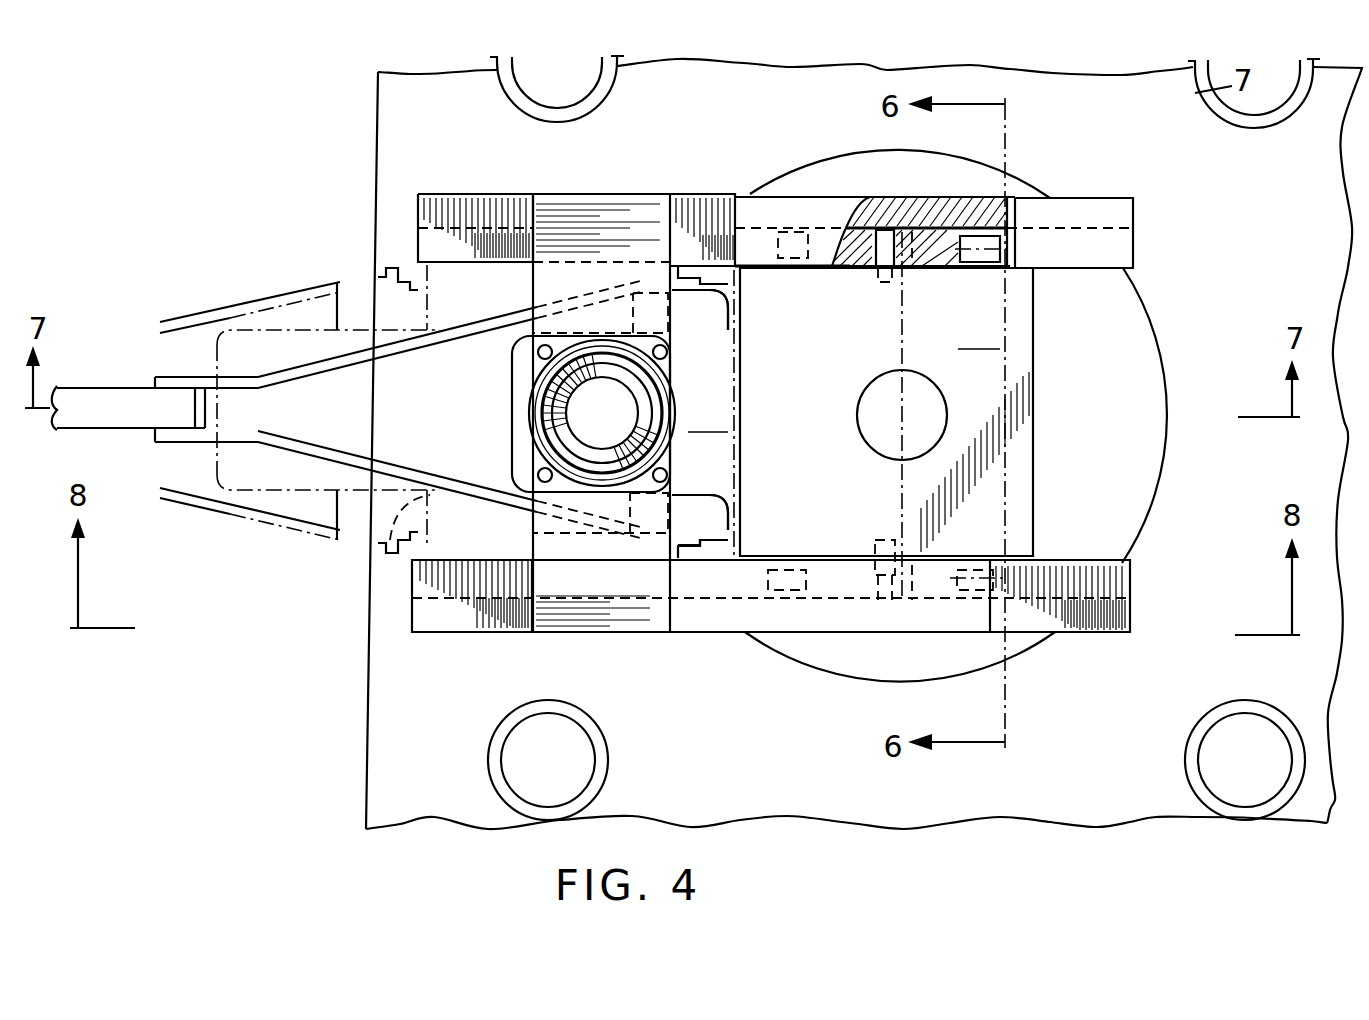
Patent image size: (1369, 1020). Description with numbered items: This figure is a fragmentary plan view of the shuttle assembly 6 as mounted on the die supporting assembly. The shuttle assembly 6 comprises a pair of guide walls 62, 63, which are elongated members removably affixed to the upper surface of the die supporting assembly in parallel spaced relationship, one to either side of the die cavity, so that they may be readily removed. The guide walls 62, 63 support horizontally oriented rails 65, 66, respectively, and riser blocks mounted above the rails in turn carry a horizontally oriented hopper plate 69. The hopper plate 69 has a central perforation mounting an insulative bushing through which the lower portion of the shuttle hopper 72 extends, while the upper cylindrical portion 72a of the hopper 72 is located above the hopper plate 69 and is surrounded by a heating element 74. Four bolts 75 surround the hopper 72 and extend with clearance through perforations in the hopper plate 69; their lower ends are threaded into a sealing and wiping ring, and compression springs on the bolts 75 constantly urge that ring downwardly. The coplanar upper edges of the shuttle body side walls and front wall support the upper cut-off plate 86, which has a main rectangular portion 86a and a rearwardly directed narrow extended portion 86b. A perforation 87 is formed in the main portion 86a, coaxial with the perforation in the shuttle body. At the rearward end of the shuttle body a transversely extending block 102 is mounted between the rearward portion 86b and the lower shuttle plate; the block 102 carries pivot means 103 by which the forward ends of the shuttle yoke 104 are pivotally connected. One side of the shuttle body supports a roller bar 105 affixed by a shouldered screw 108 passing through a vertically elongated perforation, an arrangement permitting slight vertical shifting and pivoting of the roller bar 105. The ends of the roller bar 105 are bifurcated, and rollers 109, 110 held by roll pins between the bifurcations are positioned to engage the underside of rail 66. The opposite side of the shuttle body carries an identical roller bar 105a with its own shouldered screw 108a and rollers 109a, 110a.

The shuttle assembly 6 is at (732, 186).
The guide wall 62 is at (975, 197).
The guide wall 63 is at (1130, 583).
The rail 65 is at (1133, 255).
The rail 66 is at (1100, 565).
The hopper plate 69 is at (633, 192).
The hopper 72 is at (580, 370).
The upper cylindrical portion 72a is at (545, 404).
The heating element 74 is at (675, 392).
The bolts 75 is at (538, 350).
The upper cut-off plate 86 is at (1033, 388).
The main rectangular portion 86a is at (977, 335).
The rearwardly directed narrow extended portion 86b is at (707, 418).
The perforation 87 is at (930, 378).
The transversely extending block 102 is at (713, 515).
The pivot means 103 is at (680, 552).
The shuttle yoke 104 is at (422, 478).
The roller bar 105 is at (912, 650).
The roller bar 105a is at (920, 268).
The shouldered screw 108 is at (870, 636).
The shouldered screw 108a is at (897, 198).
The roller 109 is at (988, 636).
The roller 109a is at (1010, 238).
The roller 110 is at (768, 580).
The roller 110a is at (792, 262).